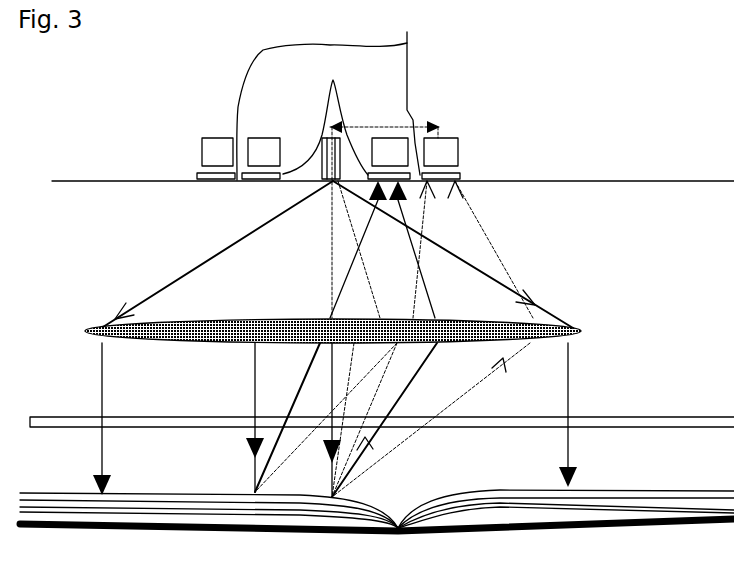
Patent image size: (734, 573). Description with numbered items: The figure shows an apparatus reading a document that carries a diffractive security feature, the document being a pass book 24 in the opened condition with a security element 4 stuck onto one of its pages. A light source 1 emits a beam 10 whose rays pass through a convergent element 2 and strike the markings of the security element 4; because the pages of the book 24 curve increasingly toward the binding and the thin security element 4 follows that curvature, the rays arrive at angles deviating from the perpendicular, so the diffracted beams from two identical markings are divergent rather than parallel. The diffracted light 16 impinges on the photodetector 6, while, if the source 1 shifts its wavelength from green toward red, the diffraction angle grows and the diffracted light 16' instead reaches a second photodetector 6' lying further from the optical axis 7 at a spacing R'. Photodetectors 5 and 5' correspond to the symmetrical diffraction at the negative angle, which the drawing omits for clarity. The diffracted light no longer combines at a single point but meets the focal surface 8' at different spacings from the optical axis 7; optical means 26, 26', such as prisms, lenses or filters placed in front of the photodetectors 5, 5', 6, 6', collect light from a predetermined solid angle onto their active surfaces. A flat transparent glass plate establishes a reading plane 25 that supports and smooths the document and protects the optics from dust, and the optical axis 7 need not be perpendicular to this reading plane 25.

The light source 1 is at (322, 150).
The convergent element 2 is at (120, 308).
The security element 4 is at (250, 490).
The photodetector 5 is at (261, 158).
The second photodetector 5' is at (216, 158).
The photodetector 6 is at (389, 158).
The second photodetector 6' is at (441, 158).
The optical axis 7 is at (330, 273).
The focal surface 8' is at (393, 157).
The beam 10 is at (103, 397).
The diffracted light 16 is at (356, 249).
The diffracted light 16' is at (473, 249).
The book 24 is at (163, 531).
The reading plane 25 is at (628, 428).
The optical means 26 is at (325, 117).
The optical means 26' is at (328, 95).
The spacing R' is at (385, 122).